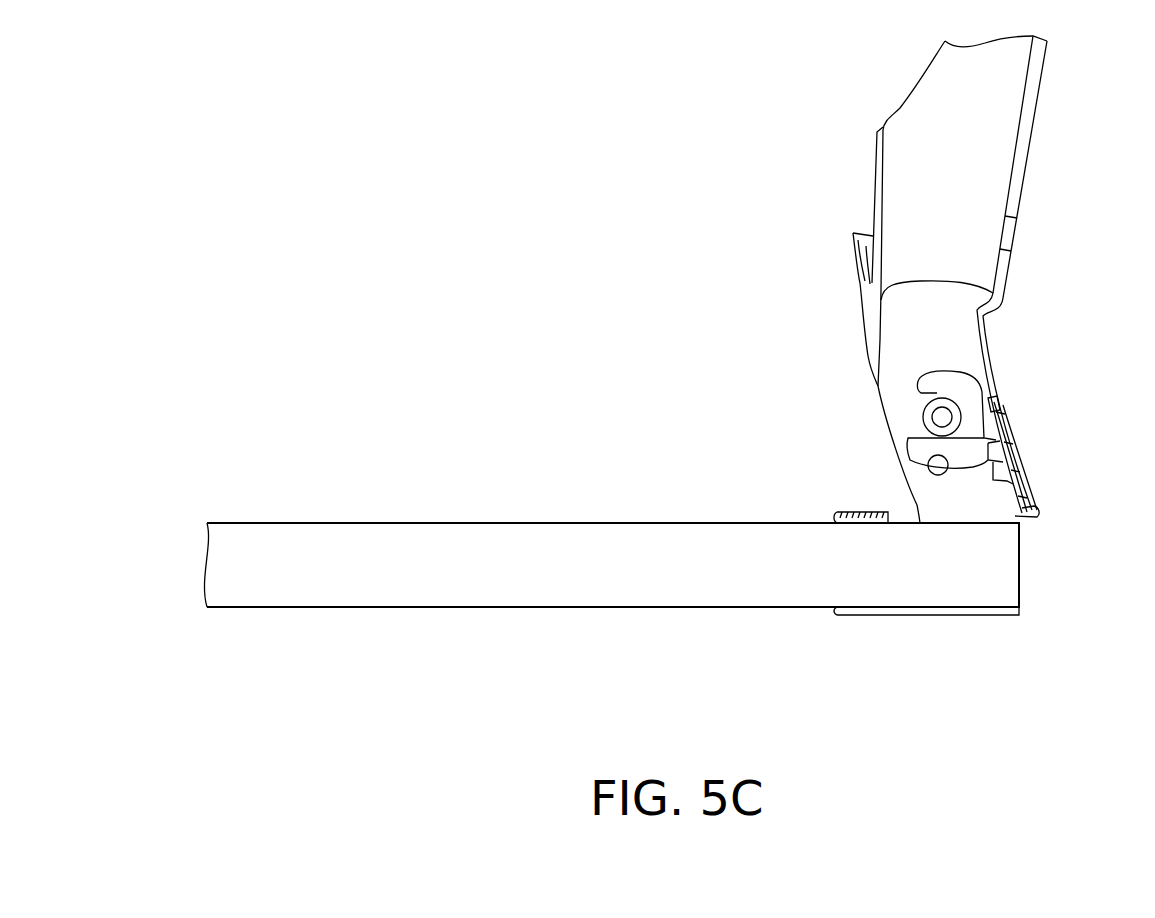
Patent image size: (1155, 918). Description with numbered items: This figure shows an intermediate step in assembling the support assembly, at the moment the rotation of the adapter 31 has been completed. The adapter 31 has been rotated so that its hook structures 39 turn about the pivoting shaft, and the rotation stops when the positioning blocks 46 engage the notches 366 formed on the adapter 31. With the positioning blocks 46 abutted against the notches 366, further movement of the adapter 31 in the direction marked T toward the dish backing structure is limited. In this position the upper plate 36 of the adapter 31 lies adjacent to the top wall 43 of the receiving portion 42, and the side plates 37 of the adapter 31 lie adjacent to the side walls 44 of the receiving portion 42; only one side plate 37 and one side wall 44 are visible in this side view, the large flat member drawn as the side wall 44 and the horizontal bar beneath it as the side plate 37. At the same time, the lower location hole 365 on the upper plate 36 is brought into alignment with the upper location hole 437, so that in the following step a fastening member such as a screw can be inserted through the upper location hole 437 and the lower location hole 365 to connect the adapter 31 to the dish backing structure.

The adapter 31 is at (892, 630).
The upper plate 36 is at (1036, 509).
The side plate 37 is at (957, 500).
The hook structure 39 is at (933, 390).
The receiving portion 42 is at (993, 346).
The top wall 43 is at (1028, 483).
The side wall 44 is at (917, 323).
The positioning block 46 is at (998, 399).
The lower location hole 365 is at (928, 463).
The notch 366 is at (1008, 415).
The upper location hole 437 is at (1013, 452).